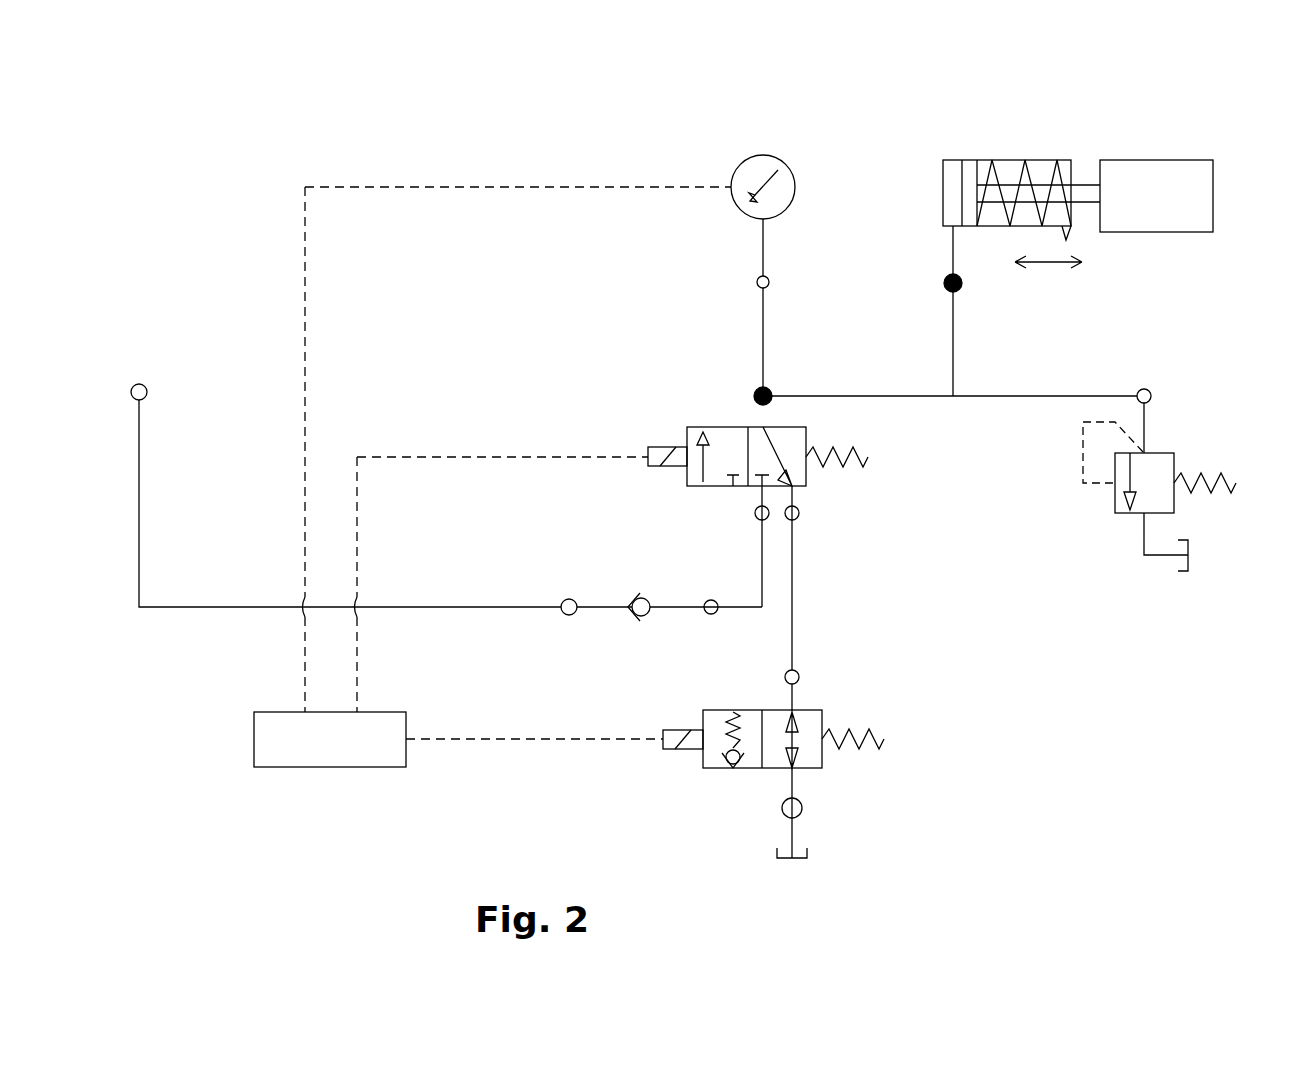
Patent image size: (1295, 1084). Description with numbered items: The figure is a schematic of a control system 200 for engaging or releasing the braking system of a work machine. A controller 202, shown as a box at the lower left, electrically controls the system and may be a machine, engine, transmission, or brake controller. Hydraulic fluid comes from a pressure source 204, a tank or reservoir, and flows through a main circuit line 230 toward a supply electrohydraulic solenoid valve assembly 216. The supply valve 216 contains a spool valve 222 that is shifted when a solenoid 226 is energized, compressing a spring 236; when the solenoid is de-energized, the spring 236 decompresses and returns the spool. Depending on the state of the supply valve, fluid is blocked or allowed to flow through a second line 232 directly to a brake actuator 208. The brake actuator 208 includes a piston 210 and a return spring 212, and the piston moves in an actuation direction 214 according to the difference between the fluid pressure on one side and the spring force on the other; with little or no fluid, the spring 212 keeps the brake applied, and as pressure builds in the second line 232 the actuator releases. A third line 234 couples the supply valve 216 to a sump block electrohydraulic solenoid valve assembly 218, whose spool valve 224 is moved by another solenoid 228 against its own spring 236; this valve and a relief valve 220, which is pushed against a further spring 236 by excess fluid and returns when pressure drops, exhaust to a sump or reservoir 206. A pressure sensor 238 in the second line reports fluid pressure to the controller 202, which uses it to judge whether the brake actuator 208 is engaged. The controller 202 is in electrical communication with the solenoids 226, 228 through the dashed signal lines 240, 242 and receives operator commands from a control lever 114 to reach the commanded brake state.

The control system 200 is at (317, 156).
The controller 202 is at (330, 767).
The pressure source 204 is at (148, 392).
The sump or reservoir 206 is at (1190, 563).
The brake actuator 208 is at (982, 151).
The piston 210 is at (962, 195).
The return spring 212 is at (1036, 170).
The actuation direction 214 is at (1048, 264).
The supply electrohydraulic solenoid valve assembly 216 is at (716, 406).
The sump block electrohydraulic solenoid valve assembly 218 is at (884, 779).
The relief valve 220 is at (1104, 533).
The spool valve 222 is at (717, 486).
The spool valve 224 is at (745, 768).
The solenoid 226 is at (668, 447).
The solenoid 228 is at (683, 730).
The main circuit line 230 is at (139, 503).
The second line 232 is at (865, 396).
The third line 234 is at (792, 598).
The spring 236 is at (868, 457).
The pressure sensor 238 is at (742, 165).
The first control signal line 240 is at (498, 452).
The second control signal line 242 is at (535, 740).
The control lever 114 is at (1155, 232).